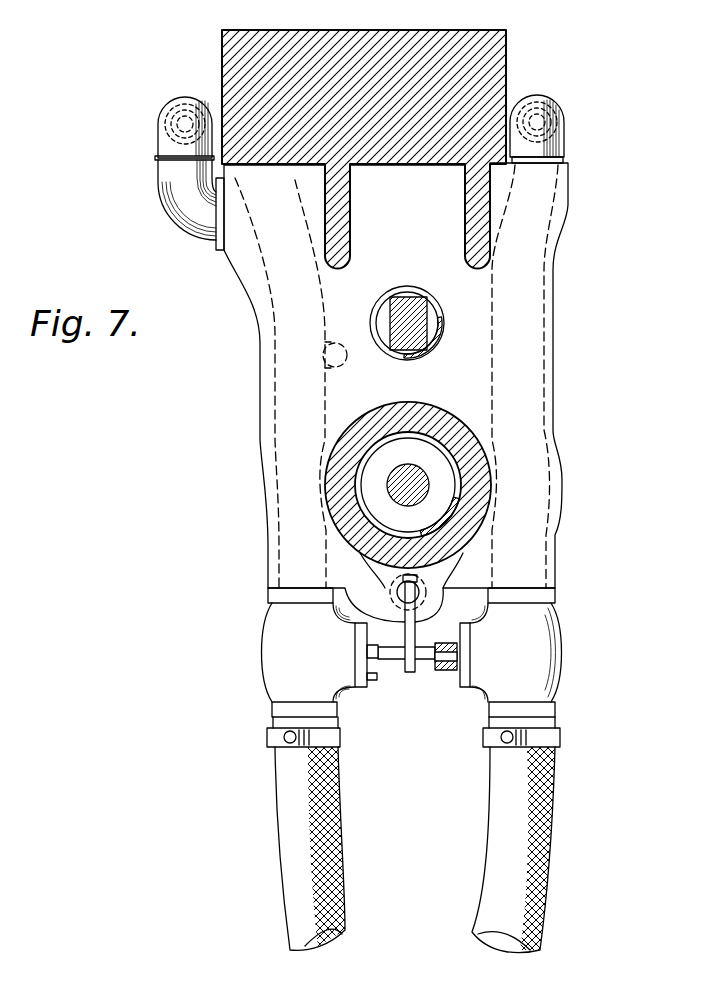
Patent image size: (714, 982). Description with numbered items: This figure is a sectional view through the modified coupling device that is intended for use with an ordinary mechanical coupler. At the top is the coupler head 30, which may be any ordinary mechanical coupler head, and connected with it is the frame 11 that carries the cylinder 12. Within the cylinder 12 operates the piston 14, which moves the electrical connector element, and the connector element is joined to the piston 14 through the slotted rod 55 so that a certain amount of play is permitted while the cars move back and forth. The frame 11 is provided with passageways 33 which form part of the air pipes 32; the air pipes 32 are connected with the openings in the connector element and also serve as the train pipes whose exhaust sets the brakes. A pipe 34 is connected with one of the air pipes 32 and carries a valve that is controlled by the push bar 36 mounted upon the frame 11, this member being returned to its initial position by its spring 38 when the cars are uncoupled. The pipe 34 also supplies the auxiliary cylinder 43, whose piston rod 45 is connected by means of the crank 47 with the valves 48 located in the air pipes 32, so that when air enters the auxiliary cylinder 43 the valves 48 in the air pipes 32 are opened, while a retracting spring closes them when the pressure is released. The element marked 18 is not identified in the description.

The frame 11 is at (392, 392).
The cylinder 12 is at (395, 432).
The piston 14 is at (408, 482).
The bearing ring 18 is at (357, 462).
The coupler head 30 is at (499, 70).
The air pipes 32 is at (492, 842).
The passageways 33 is at (572, 363).
The pipe 34 is at (340, 344).
The push bar 36 is at (420, 313).
The spring 38 is at (445, 334).
The auxiliary cylinder 43 is at (440, 605).
The piston rod 45 is at (397, 592).
The crank 47 is at (415, 630).
The valves 48 is at (580, 680).
The rod 55 is at (432, 520).